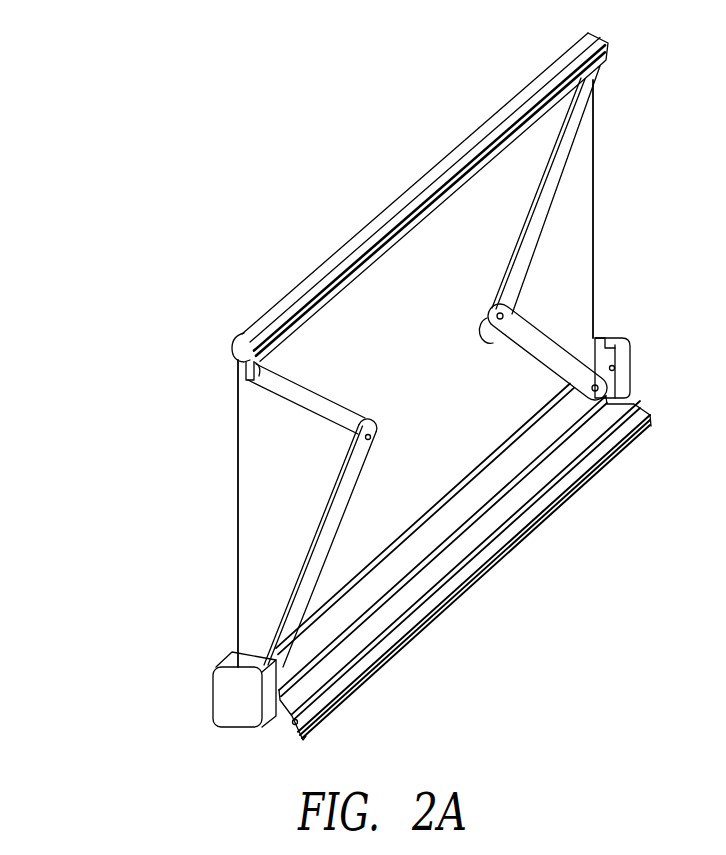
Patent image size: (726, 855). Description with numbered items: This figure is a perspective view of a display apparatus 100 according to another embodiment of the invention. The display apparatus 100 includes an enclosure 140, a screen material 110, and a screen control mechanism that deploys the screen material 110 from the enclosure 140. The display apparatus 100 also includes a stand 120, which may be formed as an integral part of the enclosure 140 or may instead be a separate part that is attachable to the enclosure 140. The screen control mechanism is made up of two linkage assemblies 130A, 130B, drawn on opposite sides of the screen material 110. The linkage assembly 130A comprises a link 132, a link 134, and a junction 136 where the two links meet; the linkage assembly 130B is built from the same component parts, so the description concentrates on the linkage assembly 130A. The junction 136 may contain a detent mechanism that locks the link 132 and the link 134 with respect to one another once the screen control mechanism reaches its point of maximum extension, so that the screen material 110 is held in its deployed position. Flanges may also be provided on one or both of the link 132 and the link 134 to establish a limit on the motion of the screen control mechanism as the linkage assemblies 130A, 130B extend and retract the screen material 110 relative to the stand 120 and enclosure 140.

The display apparatus 100 is at (200, 317).
The screen material 110 is at (431, 345).
The stand 120 is at (467, 630).
The linkage assembly 130A is at (302, 473).
The linkage assembly 130B is at (545, 293).
The link 132 is at (295, 408).
The link 134 is at (279, 628).
The junction 136 is at (380, 416).
The enclosure 140 is at (623, 373).